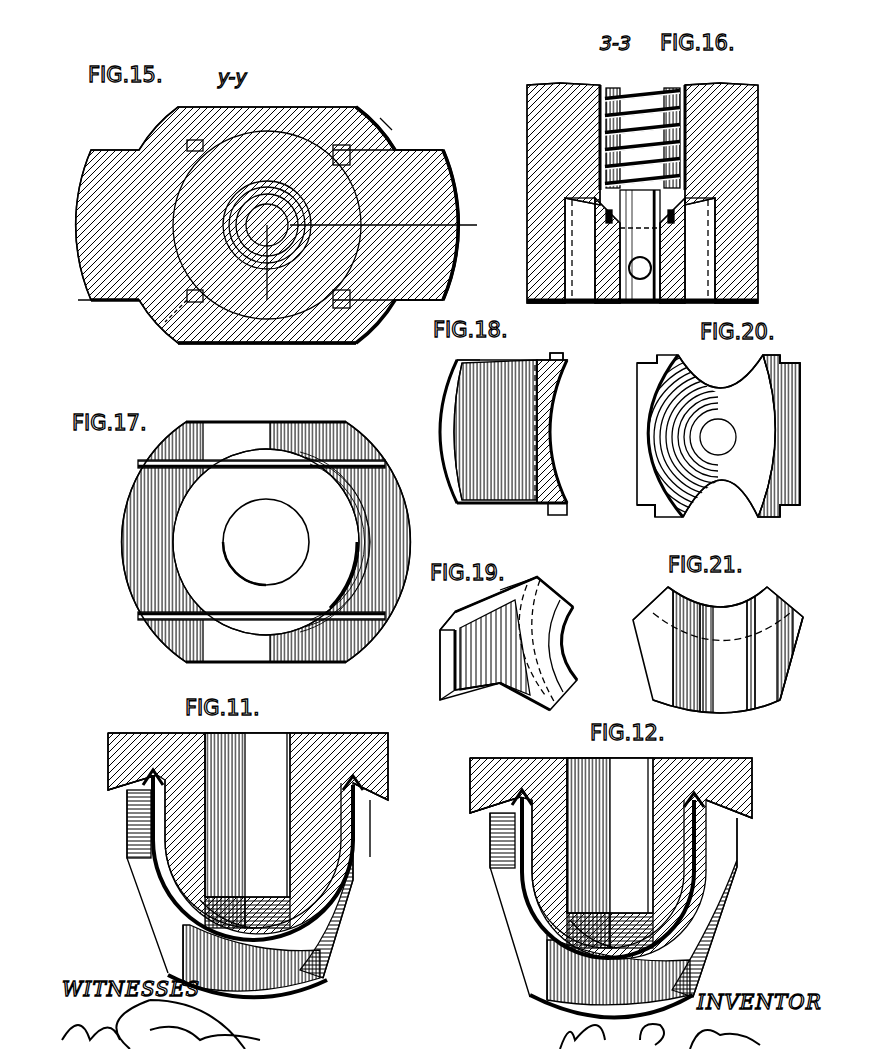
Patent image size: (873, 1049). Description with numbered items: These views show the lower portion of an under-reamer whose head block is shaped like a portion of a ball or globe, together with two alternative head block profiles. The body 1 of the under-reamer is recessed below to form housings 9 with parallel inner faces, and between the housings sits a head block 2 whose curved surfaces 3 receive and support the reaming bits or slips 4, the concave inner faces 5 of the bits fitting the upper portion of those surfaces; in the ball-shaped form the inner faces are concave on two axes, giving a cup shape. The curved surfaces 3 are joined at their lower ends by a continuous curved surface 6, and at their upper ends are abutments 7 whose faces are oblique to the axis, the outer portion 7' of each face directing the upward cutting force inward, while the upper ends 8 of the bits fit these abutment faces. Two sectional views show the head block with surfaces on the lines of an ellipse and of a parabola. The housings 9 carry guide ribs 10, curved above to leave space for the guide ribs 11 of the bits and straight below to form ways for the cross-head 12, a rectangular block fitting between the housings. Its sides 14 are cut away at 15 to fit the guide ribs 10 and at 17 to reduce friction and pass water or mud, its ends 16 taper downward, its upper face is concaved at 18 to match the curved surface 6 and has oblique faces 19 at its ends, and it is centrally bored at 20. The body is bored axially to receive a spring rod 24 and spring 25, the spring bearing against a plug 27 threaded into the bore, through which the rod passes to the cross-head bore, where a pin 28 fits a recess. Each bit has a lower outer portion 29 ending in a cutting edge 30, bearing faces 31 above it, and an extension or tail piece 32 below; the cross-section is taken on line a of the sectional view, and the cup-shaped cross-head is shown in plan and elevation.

In FIG. 15, the body 1 is at (287, 333).
In FIG. 16, the body 1 is at (750, 118).
In FIG. 11, the body 1 is at (327, 750).
In FIG. 12, the body 1 is at (703, 775).
In FIG. 15, the head block 2 is at (187, 300).
In FIG. 17, the head block 2 is at (307, 522).
In FIG. 11, the head block 2 is at (173, 868).
In FIG. 12, the head block 2 is at (530, 917).
In FIG. 15, the curved surfaces 3 is at (267, 225).
In FIG. 17, the curved surfaces 3 is at (360, 523).
In FIG. 11, the curved surfaces 3 is at (337, 837).
In FIG. 12, the curved surfaces 3 is at (693, 860).
In FIG. 15, the reaming bits or slips 4 is at (403, 180).
In FIG. 18, the reaming bits or slips 4 is at (487, 432).
In FIG. 19, the reaming bits or slips 4 is at (512, 645).
In FIG. 15, the inner faces 5 is at (350, 238).
In FIG. 18, the inner faces 5 is at (545, 433).
In FIG. 19, the inner faces 5 is at (567, 642).
In FIG. 17, the curved surface 6 is at (267, 595).
In FIG. 11, the curved surface 6 is at (257, 940).
In FIG. 12, the curved surface 6 is at (614, 957).
In FIG. 17, the abutments 7 is at (261, 542).
In FIG. 11, the abutments 7 is at (248, 756).
In FIG. 12, the abutments 7 is at (621, 778).
In FIG. 11, the outer portion of abutment face 7' is at (100, 769).
In FIG. 12, the outer portion of abutment face 7' is at (616, 793).
In FIG. 18, the upper ends 8 is at (500, 503).
In FIG. 19, the upper ends 8 is at (520, 583).
In FIG. 15, the housings 9 is at (343, 335).
In FIG. 16, the housings 9 is at (745, 213).
In FIG. 17, the housings 9 is at (262, 428).
In FIG. 11, the housings 9 is at (287, 982).
In FIG. 12, the housings 9 is at (605, 984).
In FIG. 15, the guide ribs 10 is at (393, 150).
In FIG. 17, the guide ribs 10 is at (190, 615).
In FIG. 11, the guide ribs 10 is at (353, 900).
In FIG. 12, the guide ribs 10 is at (730, 890).
In FIG. 15, the guide ribs 11 is at (388, 120).
In FIG. 18, the guide ribs 11 is at (558, 352).
In FIG. 16, the cross-head 12 is at (603, 300).
In FIG. 20, the cross-head 12 is at (642, 478).
In FIG. 21, the cross-head 12 is at (665, 680).
In FIG. 20, the sides 14 is at (765, 520).
In FIG. 21, the sides 14 is at (763, 607).
In FIG. 20, the cut-away portions 15 is at (790, 510).
In FIG. 21, the cut-away portions 15 is at (790, 622).
In FIG. 21, the ends 16 is at (792, 660).
In FIG. 20, the cut-away portions 17 is at (708, 520).
In FIG. 21, the cut-away portions 17 is at (720, 692).
In FIG. 20, the concaved upper face 18 is at (758, 437).
In FIG. 21, the concaved upper face 18 is at (703, 607).
In FIG. 20, the oblique faces 19 is at (790, 475).
In FIG. 20, the central bore 20 is at (718, 437).
In FIG. 15, the spring rod 24 is at (273, 220).
In FIG. 16, the spring rod 24 is at (652, 302).
In FIG. 15, the spring 25 is at (305, 190).
In FIG. 16, the spring 25 is at (683, 162).
In FIG. 16, the plug 27 is at (683, 198).
In FIG. 16, the pin 28 is at (638, 280).
In FIG. 15, the lower portion of outer face 29 is at (458, 205).
In FIG. 18, the lower portion of outer face 29 is at (444, 395).
In FIG. 19, the lower portion of outer face 29 is at (440, 668).
In FIG. 19, the cutting edge 30 is at (440, 702).
In FIG. 18, the bearing faces 31 is at (457, 380).
In FIG. 19, the bearing faces 31 is at (448, 624).
In FIG. 19, the extension or tail piece 32 is at (512, 698).
In FIG. 15, the section line a— a is at (277, 265).